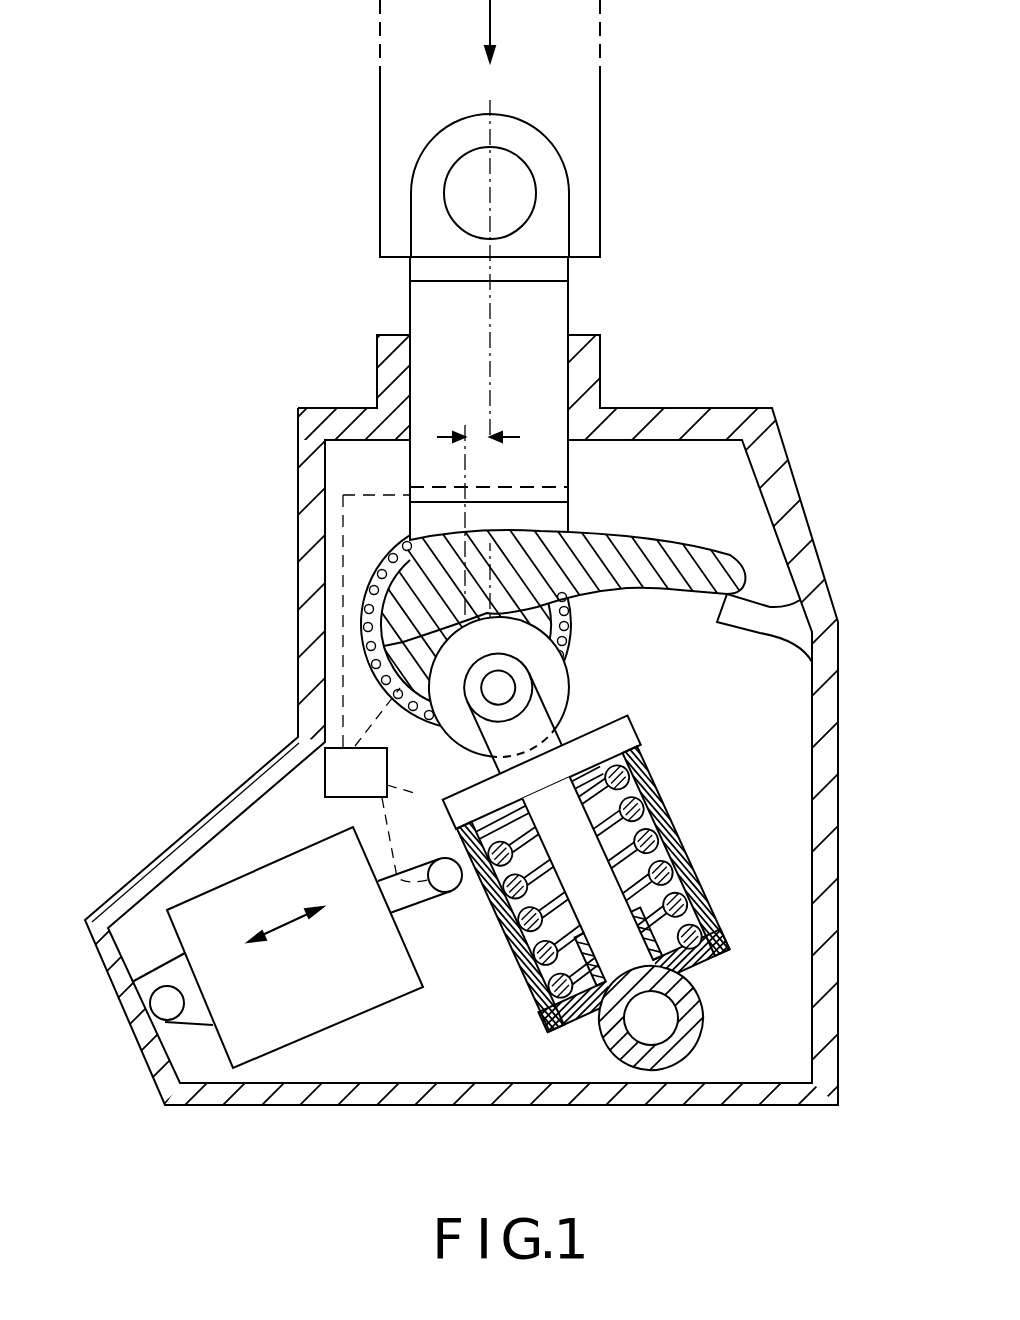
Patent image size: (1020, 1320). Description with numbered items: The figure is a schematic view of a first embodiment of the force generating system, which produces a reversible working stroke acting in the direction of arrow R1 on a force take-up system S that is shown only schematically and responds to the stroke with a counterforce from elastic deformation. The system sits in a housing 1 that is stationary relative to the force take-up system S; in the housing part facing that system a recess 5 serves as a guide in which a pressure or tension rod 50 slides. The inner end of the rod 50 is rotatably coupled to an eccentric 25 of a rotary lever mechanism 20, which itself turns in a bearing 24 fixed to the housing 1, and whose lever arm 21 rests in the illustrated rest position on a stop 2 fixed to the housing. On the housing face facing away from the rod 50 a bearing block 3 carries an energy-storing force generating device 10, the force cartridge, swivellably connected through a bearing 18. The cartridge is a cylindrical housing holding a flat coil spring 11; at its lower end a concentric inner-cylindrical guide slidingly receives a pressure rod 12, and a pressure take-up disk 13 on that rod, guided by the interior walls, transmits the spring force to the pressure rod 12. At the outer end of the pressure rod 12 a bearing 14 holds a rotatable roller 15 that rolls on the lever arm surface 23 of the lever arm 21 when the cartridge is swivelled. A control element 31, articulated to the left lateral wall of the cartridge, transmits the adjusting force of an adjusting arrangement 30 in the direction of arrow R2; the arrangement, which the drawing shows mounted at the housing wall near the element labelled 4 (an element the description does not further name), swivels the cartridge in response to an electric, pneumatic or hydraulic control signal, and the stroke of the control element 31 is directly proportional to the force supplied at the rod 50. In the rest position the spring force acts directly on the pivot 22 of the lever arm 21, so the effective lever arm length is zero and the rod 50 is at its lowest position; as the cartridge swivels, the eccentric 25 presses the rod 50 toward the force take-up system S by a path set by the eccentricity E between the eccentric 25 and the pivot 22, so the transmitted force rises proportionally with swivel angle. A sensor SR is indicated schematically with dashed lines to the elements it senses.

The housing 1 is at (840, 806).
The stop 2 is at (771, 606).
The bearing block 3 is at (694, 1075).
The motor mount 4 is at (158, 1030).
The recess 5 is at (600, 378).
The force generating device 10 is at (690, 905).
The flat coil spring 11 is at (545, 1003).
The pressure rod 12 is at (620, 940).
The pressure take-up disk 13 is at (620, 748).
The bearing 14 is at (515, 687).
The roller 15 is at (452, 820).
The bearing 18 is at (688, 1017).
The rotary lever mechanism 20 is at (468, 620).
The lever arm 21 is at (670, 534).
The pivot 22 is at (376, 646).
The lever arm surface 23 is at (682, 592).
The bearing 24 is at (390, 545).
The eccentric 25 is at (572, 622).
The adjusting arrangement 30 is at (337, 1027).
The control element 31 is at (437, 903).
The pressure or tension rod 50 is at (568, 307).
The force take-up system S is at (600, 132).
The sensor SR is at (376, 785).
The eccentricity E is at (478, 412).
The arrow R1 is at (515, 31).
The arrow R2 is at (285, 910).